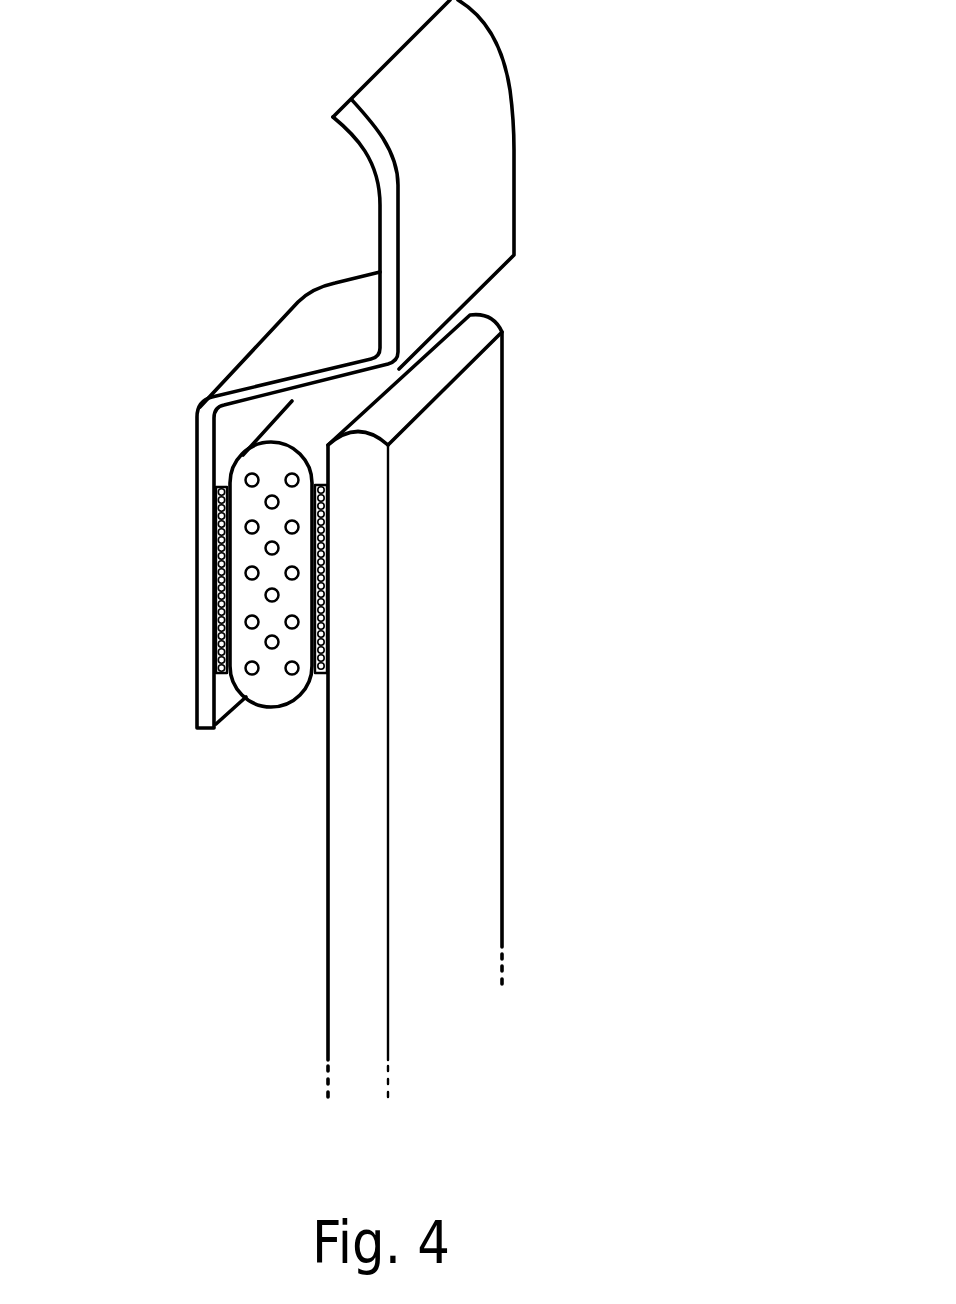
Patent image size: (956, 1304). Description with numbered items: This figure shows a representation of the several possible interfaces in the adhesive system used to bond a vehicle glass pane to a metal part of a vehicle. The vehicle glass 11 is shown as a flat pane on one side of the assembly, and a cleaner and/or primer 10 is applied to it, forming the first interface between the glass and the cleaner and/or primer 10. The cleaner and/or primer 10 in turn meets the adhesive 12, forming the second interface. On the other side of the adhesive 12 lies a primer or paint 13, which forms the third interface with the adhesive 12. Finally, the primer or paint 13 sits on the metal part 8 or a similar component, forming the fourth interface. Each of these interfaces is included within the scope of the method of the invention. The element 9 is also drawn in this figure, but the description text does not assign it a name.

The metal part 8 is at (311, 348).
The cushion pad 9 is at (285, 537).
The cleaner and/or primer 10 is at (345, 595).
The vehicle glass 11 is at (488, 820).
The adhesive 12 is at (270, 663).
The primer or paint 13 is at (238, 553).